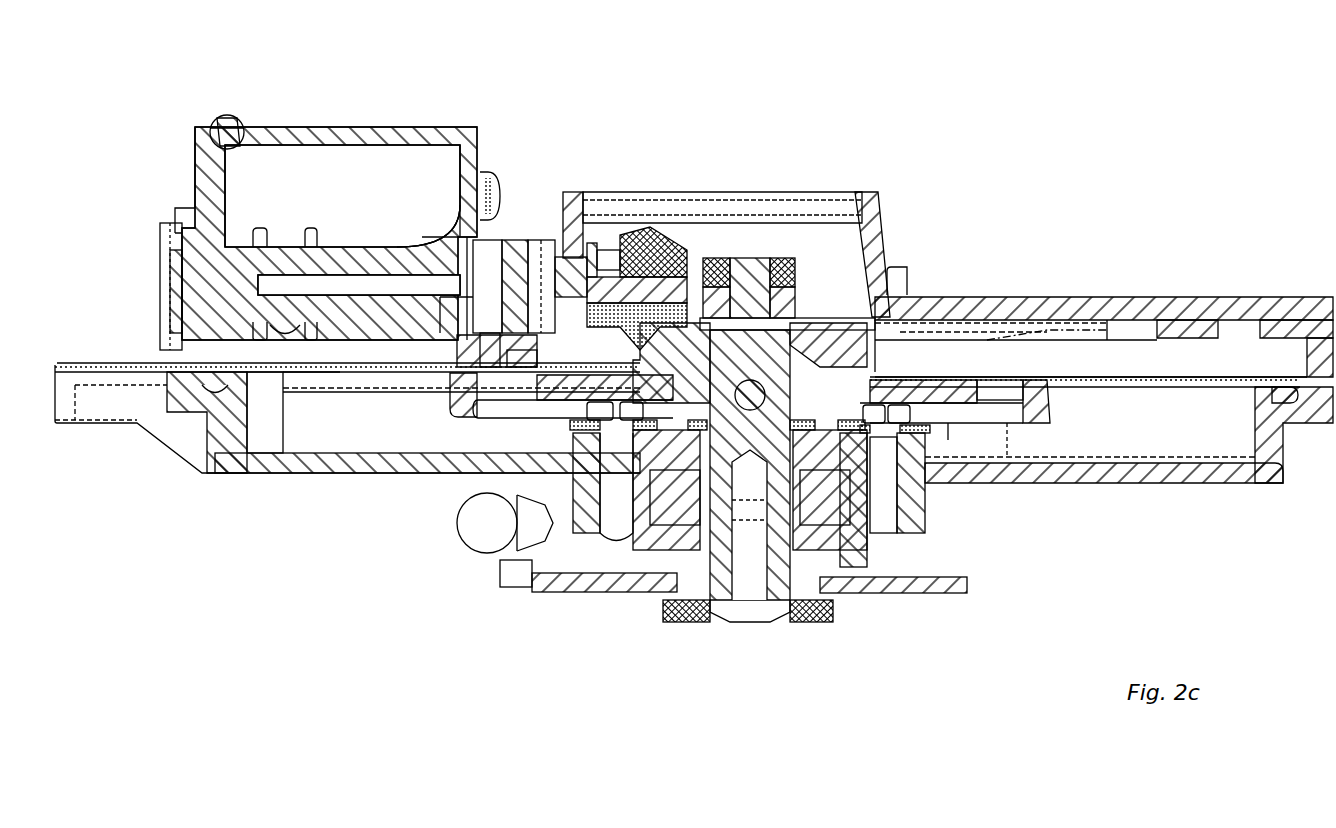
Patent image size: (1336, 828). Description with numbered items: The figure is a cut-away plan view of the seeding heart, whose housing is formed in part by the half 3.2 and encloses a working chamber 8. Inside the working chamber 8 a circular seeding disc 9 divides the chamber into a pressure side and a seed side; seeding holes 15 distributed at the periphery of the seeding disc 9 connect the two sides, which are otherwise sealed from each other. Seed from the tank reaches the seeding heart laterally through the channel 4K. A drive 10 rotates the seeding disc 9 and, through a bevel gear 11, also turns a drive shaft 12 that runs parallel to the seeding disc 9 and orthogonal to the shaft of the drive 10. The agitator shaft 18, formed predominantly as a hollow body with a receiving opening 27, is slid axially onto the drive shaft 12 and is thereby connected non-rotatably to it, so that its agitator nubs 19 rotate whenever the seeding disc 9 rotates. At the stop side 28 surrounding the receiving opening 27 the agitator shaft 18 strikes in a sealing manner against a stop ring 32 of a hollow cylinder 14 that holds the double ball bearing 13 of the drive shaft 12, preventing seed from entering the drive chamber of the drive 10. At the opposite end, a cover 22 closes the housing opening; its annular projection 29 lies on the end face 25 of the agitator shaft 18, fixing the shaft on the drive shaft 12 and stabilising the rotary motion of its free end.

The channel 4K is at (374, 162).
The agitator nubs 19 is at (262, 226).
The agitator shaft 18 is at (400, 212).
The projection 29 is at (182, 232).
The cover 22 is at (160, 277).
The end face 25 is at (176, 300).
The stop ring 32 is at (500, 235).
The double ball bearing 13 is at (503, 238).
The hollow cylinder 14 is at (547, 238).
The half 3.2 is at (878, 205).
The working chamber 8 is at (1131, 352).
The seeding holes 15 is at (1230, 388).
The drive shaft 12 is at (652, 280).
The bevel gear 11 is at (696, 303).
The drive 10 is at (676, 633).
The seeding disc 9 is at (332, 368).
The receiving opening 27 is at (376, 296).
The stop side 28 is at (488, 366).